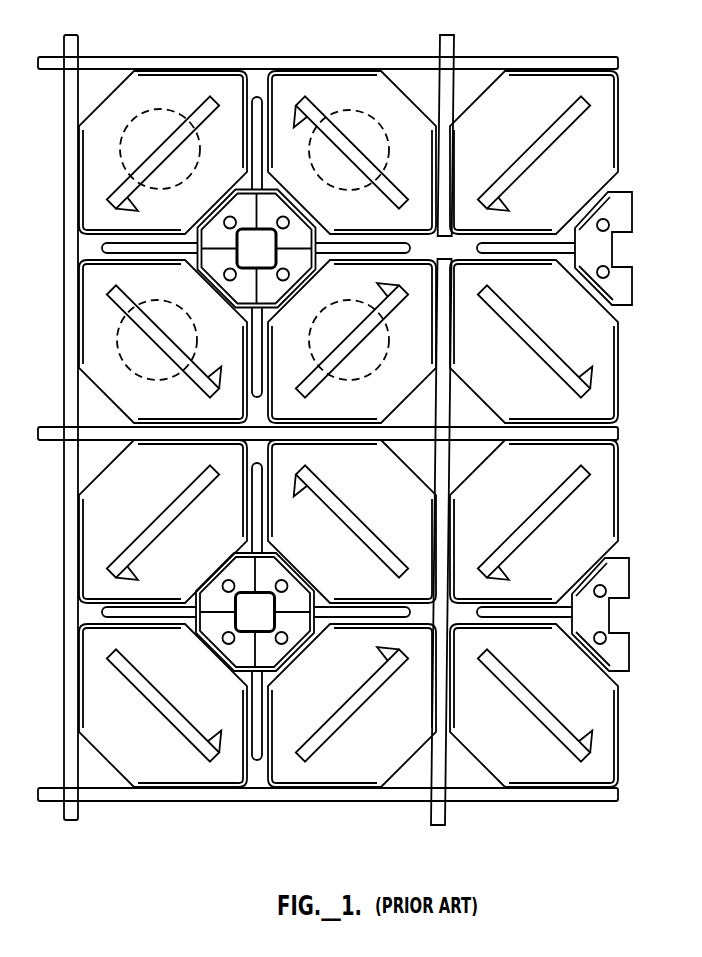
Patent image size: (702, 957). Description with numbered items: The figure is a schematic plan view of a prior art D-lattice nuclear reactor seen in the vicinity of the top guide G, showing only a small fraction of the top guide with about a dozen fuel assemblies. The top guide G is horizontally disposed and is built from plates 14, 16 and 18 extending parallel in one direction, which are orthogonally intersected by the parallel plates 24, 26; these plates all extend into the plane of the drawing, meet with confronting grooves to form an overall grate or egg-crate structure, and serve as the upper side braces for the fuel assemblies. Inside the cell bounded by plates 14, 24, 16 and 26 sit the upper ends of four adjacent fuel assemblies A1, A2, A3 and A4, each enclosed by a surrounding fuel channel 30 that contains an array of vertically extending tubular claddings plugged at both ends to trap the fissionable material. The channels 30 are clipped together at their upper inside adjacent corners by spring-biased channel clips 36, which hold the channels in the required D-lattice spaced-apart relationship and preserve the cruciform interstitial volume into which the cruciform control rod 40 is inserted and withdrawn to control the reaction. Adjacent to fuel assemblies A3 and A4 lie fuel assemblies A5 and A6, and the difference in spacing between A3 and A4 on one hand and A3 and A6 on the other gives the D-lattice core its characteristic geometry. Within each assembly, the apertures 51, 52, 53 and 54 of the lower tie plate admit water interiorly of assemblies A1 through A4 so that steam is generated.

The plate 14 is at (144, 57).
The plate 16 is at (117, 432).
The plate 18 is at (138, 795).
The plate 24 is at (64, 326).
The plate 26 is at (426, 414).
The fuel channel 30 is at (82, 150).
The channel clip 36 is at (274, 208).
The control rod 40 is at (251, 147).
The aperture 51 is at (171, 190).
The aperture 52 is at (197, 340).
The aperture 53 is at (380, 369).
The aperture 54 is at (391, 155).
The top guide G is at (417, 54).
The fuel assembly A1 is at (161, 106).
The fuel assembly A2 is at (168, 298).
The fuel assembly A3 is at (341, 301).
The fuel assembly A4 is at (361, 106).
The fuel assembly A5 is at (516, 124).
The fuel assembly A6 is at (530, 303).